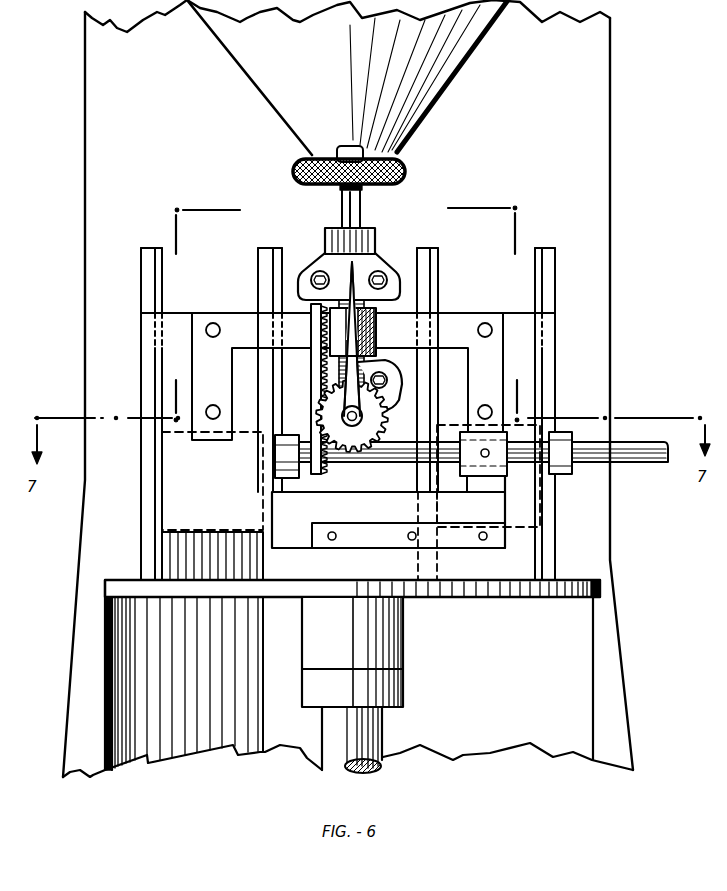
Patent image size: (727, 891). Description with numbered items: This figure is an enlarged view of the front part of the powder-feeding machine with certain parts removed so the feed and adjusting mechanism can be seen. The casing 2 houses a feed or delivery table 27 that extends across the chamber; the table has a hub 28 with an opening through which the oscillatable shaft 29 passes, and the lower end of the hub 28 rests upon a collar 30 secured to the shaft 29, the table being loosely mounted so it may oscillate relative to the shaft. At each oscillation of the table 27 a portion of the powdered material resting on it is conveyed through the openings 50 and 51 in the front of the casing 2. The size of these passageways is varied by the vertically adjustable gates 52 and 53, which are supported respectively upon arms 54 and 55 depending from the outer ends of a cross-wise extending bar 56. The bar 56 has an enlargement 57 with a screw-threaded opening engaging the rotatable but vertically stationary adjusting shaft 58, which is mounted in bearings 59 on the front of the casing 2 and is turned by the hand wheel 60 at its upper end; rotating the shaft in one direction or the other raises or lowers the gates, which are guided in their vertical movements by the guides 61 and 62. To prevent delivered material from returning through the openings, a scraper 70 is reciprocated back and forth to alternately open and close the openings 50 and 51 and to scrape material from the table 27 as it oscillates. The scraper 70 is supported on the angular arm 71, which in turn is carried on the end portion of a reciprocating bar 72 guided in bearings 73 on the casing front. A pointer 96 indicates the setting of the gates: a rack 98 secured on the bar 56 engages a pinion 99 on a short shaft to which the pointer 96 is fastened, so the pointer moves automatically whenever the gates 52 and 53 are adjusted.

The casing portion 2 is at (613, 278).
The feed or delivery table 27 is at (433, 572).
The hub 28 is at (403, 652).
The oscillatable shaft 29 is at (380, 763).
The collar 30 is at (403, 692).
The opening 50 is at (203, 574).
The opening 51 is at (503, 567).
The gate 52 is at (180, 508).
The gate 53 is at (533, 377).
The arm 54 is at (202, 364).
The arm 55 is at (490, 365).
The cross-wise extending bar 56 is at (250, 322).
The enlargement 57 is at (375, 328).
The adjusting shaft 58 is at (362, 202).
The bearings 59 is at (372, 231).
The hand wheel 60 is at (395, 159).
The guide 61 is at (258, 274).
The guide 62 is at (440, 278).
The scraper 70 is at (290, 606).
The angular arm 71 is at (357, 554).
The reciprocating bar 72 is at (668, 442).
The bearings 73 is at (297, 470).
The pointer 96 is at (380, 310).
The rack 98 is at (312, 380).
The pinion 99 is at (378, 430).